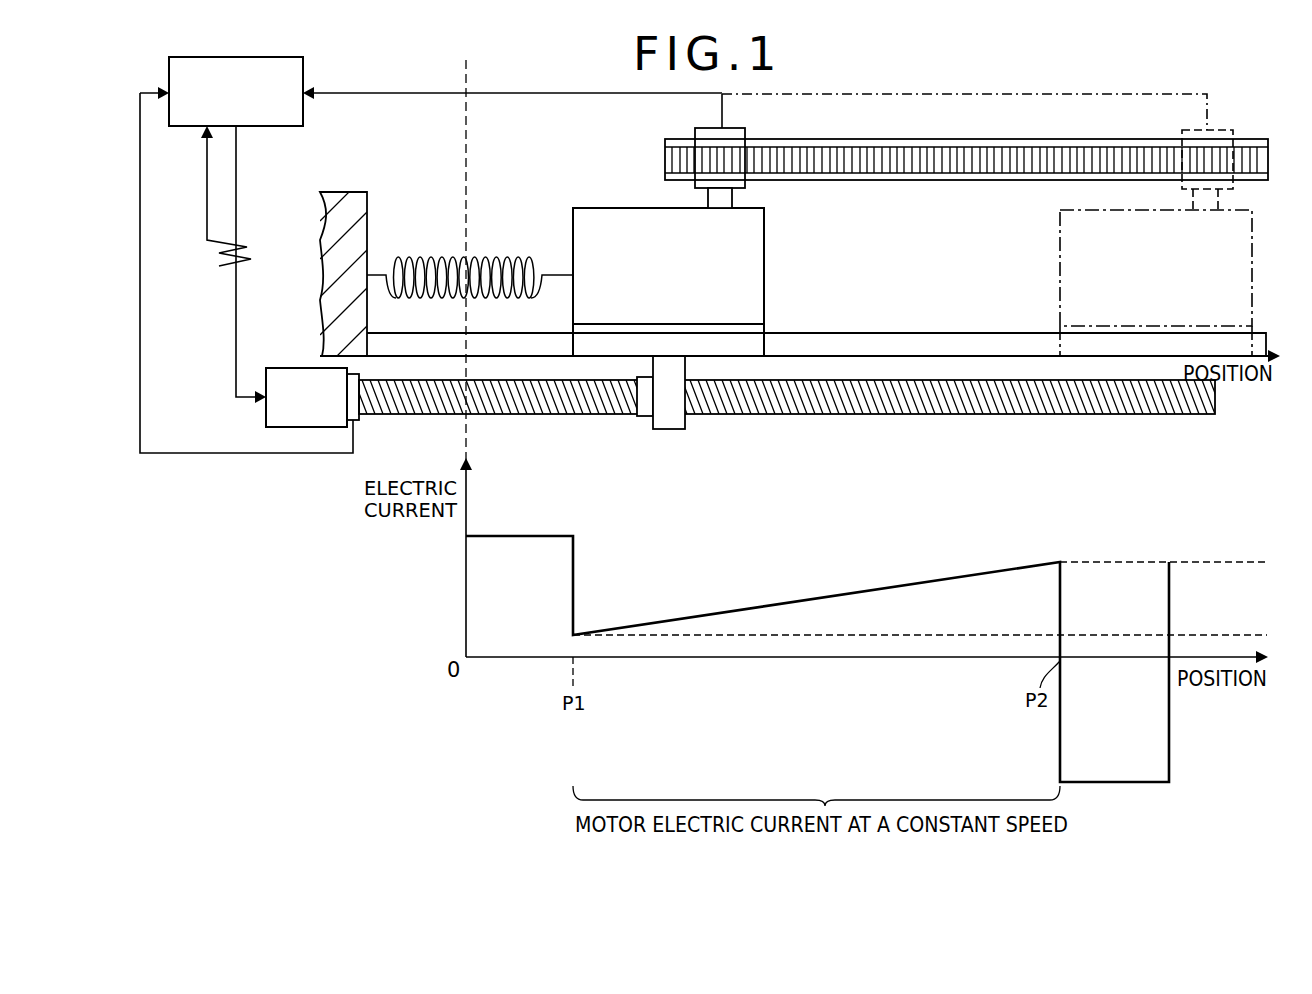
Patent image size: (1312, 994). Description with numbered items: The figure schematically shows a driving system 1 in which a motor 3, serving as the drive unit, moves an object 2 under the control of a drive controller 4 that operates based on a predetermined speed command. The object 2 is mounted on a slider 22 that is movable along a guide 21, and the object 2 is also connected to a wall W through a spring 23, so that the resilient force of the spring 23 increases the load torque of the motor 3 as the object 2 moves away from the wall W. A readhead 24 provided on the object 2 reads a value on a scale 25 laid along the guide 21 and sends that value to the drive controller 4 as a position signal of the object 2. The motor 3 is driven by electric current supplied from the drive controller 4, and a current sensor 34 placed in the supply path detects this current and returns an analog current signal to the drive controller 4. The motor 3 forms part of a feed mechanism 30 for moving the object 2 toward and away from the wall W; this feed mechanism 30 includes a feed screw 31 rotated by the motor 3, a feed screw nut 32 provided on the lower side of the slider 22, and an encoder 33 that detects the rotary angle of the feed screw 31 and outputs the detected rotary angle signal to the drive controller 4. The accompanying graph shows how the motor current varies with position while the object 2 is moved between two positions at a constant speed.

The driving system 1 is at (158, 57).
The object 2 is at (615, 208).
The motor 3 is at (285, 368).
The drive controller 4 is at (303, 66).
The guide 21 is at (911, 333).
The slider 22 is at (733, 324).
The spring 23 is at (503, 258).
The readhead 24 is at (735, 128).
The scale 25 is at (937, 139).
The feed mechanism 30 is at (755, 454).
The feed screw 31 is at (583, 415).
The feed screw nut 32 is at (668, 430).
The encoder 33 is at (357, 422).
The current sensor 34 is at (243, 246).
The wall W is at (354, 192).